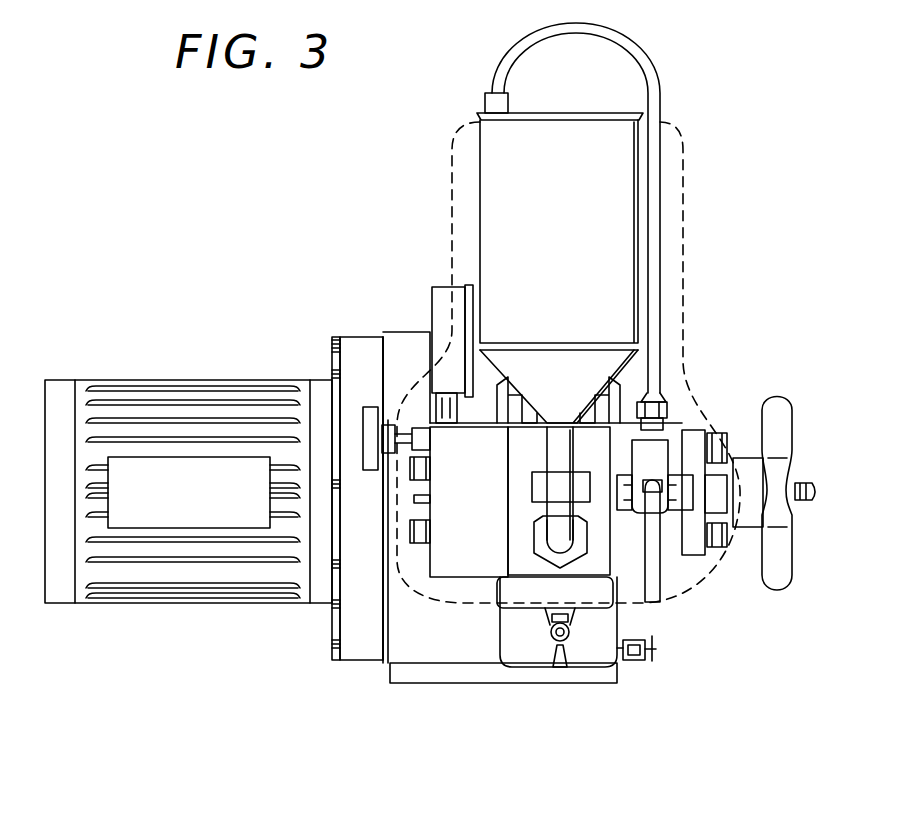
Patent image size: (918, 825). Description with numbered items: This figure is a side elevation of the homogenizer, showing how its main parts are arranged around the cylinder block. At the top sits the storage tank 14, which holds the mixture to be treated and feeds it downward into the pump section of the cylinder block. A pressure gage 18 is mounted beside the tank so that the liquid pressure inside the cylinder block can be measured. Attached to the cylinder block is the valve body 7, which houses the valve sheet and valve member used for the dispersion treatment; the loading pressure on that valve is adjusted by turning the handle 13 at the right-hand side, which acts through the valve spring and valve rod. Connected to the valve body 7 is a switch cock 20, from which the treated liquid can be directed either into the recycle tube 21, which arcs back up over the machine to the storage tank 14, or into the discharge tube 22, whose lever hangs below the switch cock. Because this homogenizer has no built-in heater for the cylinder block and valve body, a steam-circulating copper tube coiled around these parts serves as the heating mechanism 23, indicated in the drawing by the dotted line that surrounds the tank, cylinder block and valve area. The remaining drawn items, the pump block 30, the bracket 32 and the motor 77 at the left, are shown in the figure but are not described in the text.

The valve body 7 is at (680, 423).
The handle 13 is at (788, 573).
The storage tank 14 is at (480, 157).
The pressure gage 18 is at (432, 290).
The switch cock 20 is at (660, 455).
The recycle tube 21 is at (653, 333).
The discharge tube 22 is at (653, 593).
The heating mechanism 23 is at (445, 600).
The pump block 30 is at (447, 560).
The bracket 32 is at (367, 407).
The motor 77 is at (207, 397).